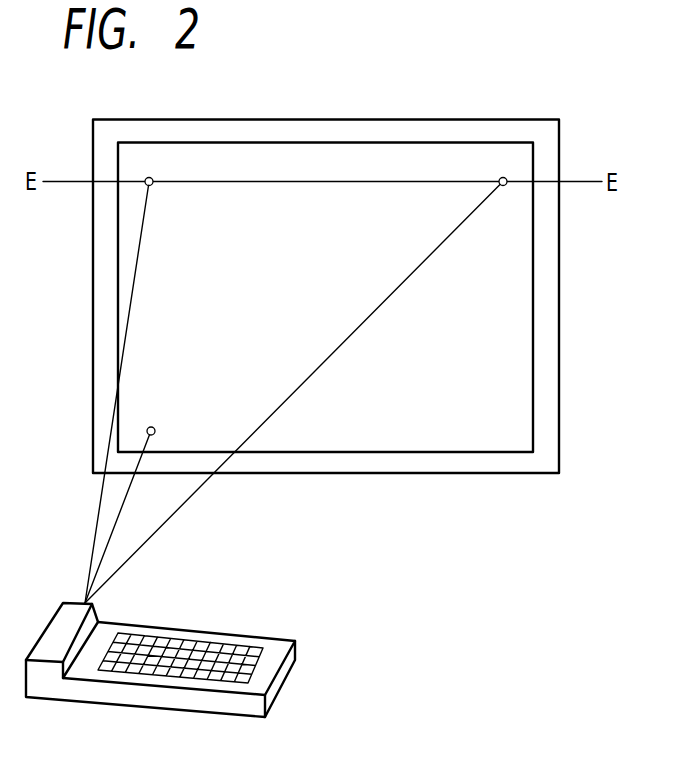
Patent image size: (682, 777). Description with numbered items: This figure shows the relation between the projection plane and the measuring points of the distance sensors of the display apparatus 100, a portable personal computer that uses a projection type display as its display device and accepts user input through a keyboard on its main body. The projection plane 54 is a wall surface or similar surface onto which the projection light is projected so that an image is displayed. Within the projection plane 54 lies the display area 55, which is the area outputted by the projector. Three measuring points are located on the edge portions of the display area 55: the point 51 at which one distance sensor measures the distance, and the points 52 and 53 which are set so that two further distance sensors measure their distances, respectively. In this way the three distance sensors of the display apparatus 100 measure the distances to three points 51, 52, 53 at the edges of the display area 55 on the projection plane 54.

The measuring point 51 is at (502, 178).
The measuring point 52 is at (149, 178).
The measuring point 53 is at (147, 431).
The projection plane 54 is at (258, 120).
The display area 55 is at (335, 141).
The display apparatus 100 is at (277, 645).